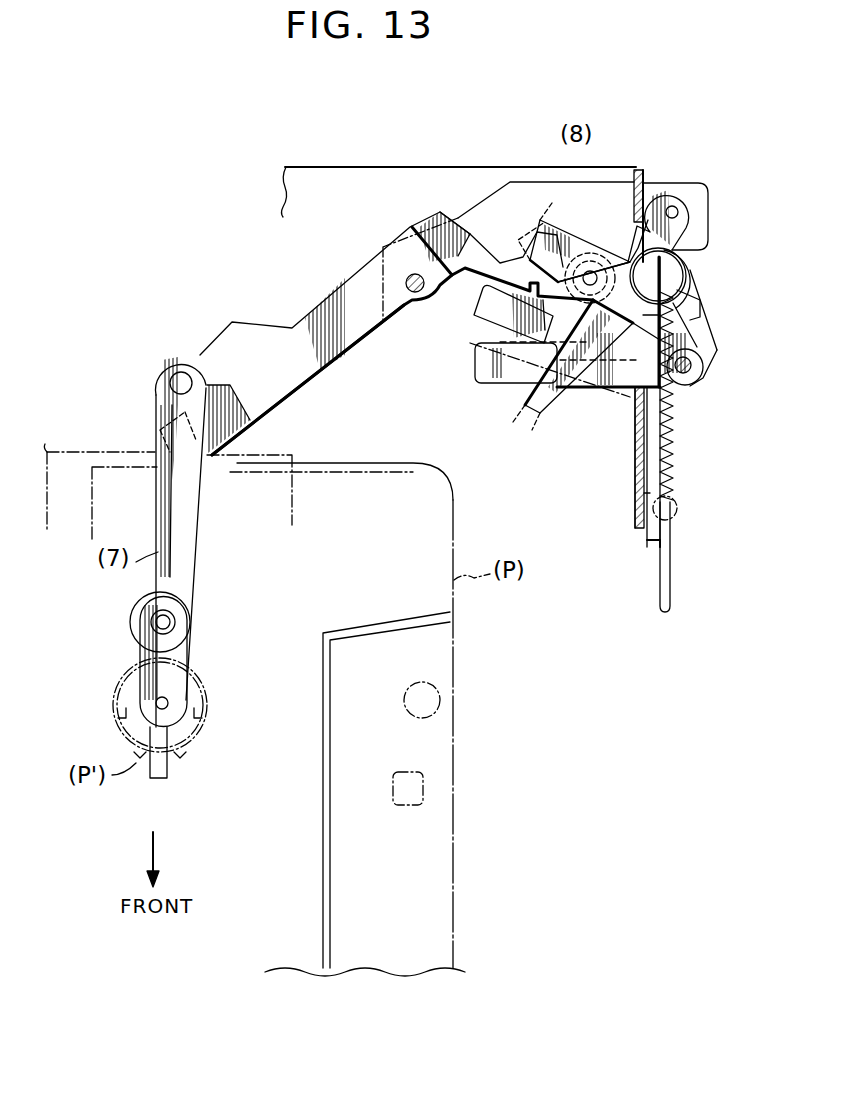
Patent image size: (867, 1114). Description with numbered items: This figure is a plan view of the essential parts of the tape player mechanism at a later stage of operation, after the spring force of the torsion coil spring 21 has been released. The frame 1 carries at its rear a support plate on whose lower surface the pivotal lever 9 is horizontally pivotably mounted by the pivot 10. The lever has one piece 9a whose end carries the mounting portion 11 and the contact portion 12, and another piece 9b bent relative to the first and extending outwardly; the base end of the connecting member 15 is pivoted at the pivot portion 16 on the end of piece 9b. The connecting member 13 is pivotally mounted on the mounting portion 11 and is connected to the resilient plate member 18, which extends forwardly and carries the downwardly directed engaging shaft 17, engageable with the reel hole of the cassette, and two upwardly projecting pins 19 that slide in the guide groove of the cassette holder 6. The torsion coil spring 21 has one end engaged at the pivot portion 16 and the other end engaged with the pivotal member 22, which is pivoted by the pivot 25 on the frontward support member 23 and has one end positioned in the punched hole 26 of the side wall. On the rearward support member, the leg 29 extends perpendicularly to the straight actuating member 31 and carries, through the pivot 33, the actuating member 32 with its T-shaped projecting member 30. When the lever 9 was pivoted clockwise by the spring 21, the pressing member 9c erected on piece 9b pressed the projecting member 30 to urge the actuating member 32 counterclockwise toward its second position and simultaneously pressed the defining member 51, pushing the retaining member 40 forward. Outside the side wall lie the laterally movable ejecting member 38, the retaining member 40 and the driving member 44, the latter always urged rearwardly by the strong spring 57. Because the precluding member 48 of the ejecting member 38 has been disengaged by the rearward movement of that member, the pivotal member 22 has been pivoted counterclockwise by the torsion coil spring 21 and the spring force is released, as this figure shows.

The instrument frame 1 is at (380, 167).
The cassette holder 6 is at (92, 444).
The pivotal lever 9 is at (318, 306).
The one piece 9a is at (289, 381).
The other piece 9b is at (431, 227).
The pressing member 9c is at (543, 315).
The pivot 10 is at (422, 288).
The mounting portion 11 is at (204, 357).
The contact portion 12 is at (214, 462).
The connecting member 13 is at (192, 550).
The connecting member 15 is at (621, 262).
The pivot portion 16 is at (591, 266).
The engaging shaft 17 is at (130, 705).
The member 18 is at (142, 666).
The pins 19 is at (176, 620).
The torsion coil spring 21 is at (690, 274).
The pivotal member 22 is at (690, 299).
The support member 23 is at (665, 183).
The pivot 25 is at (678, 212).
The punched hole 26 is at (624, 394).
The leg 29 is at (552, 392).
The projecting member 30 is at (486, 322).
The actuating member 31 is at (541, 243).
The actuating member 32 is at (702, 334).
The pivot 33 is at (700, 378).
The ejecting member 38 is at (634, 452).
The retaining member 40 is at (648, 546).
The driving member 44 is at (670, 578).
The precluding member 48 is at (703, 360).
The defining member 51 is at (492, 383).
The strong spring 57 is at (672, 448).